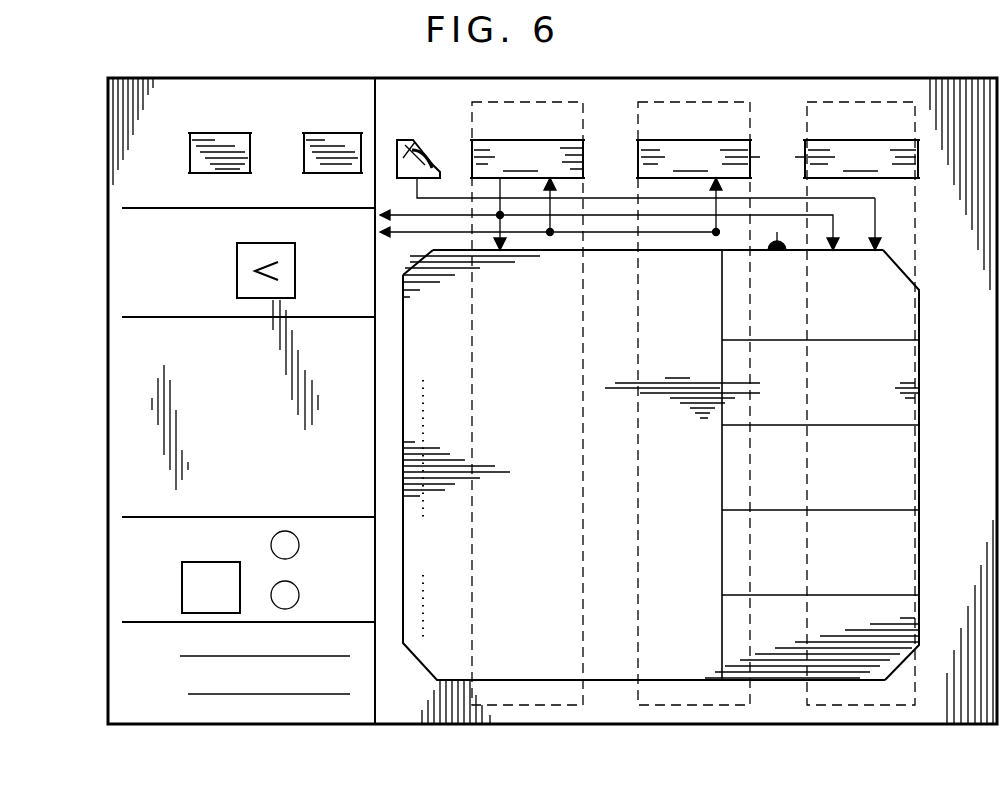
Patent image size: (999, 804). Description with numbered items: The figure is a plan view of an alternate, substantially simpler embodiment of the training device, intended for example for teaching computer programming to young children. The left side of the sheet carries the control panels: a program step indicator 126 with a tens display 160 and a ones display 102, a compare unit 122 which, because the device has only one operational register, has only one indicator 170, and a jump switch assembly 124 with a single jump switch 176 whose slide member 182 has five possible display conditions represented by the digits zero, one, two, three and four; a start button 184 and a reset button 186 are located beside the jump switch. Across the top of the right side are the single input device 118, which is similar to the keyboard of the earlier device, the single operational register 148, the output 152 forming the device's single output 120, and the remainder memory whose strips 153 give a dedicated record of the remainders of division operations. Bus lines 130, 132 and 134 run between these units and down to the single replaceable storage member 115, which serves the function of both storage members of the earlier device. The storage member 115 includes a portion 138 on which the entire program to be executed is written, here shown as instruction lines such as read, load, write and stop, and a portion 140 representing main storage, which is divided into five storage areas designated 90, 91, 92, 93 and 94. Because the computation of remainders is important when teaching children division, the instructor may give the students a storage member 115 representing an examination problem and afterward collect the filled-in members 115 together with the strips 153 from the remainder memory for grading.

The program step indicator 126 is at (115, 140).
The tens display 160 is at (186, 152).
The ones display 102 is at (304, 148).
The compare unit 122 is at (120, 272).
The indicator 170 is at (234, 284).
The jump switch assembly 124 is at (125, 585).
The jump switch 176 is at (181, 577).
The slide member 182 is at (190, 596).
The start button 184 is at (292, 531).
The reset button 186 is at (284, 609).
The input device 118 is at (629, 151).
The operational register 148 is at (527, 403).
The output 152 is at (694, 403).
The single output 120 is at (778, 156).
The strips 153 is at (860, 399).
The bus line 130 is at (877, 208).
The bus line 132 is at (835, 228).
The bus line 134 is at (628, 236).
The program portion 138 is at (615, 663).
The main storage portion 140 is at (905, 525).
The replaceable storage member 115 is at (905, 612).
The storage area 90 is at (736, 265).
The storage area 91 is at (736, 355).
The storage area 92 is at (736, 440).
The storage area 93 is at (736, 525).
The storage area 94 is at (736, 610).